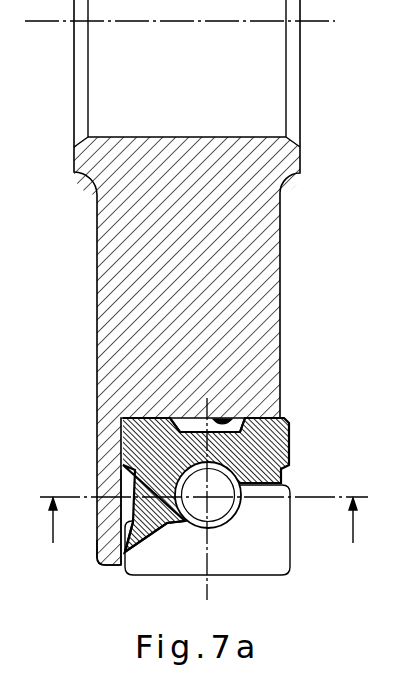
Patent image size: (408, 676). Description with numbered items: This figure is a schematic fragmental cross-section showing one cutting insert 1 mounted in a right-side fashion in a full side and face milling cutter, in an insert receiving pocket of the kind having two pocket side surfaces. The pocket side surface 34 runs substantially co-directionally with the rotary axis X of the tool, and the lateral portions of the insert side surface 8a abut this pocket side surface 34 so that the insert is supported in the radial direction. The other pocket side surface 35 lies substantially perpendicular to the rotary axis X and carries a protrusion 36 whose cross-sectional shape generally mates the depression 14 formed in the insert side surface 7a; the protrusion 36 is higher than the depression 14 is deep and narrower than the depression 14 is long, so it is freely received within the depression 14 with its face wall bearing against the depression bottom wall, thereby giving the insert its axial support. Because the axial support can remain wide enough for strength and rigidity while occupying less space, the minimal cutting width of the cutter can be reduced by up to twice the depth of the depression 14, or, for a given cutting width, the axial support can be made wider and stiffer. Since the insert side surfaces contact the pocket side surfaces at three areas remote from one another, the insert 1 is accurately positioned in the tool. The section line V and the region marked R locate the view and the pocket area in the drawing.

The cutting insert 1 is at (262, 452).
The pocket side surface 34 is at (242, 416).
The insert side surface 8a is at (232, 421).
The protrusion 36 is at (133, 493).
The pocket side surface 35 is at (100, 548).
The insert side surface 7a is at (124, 565).
The depression 14 is at (168, 522).
The race block R is at (272, 550).
The rotary axis X is at (187, 21).
The section line V is at (204, 533).